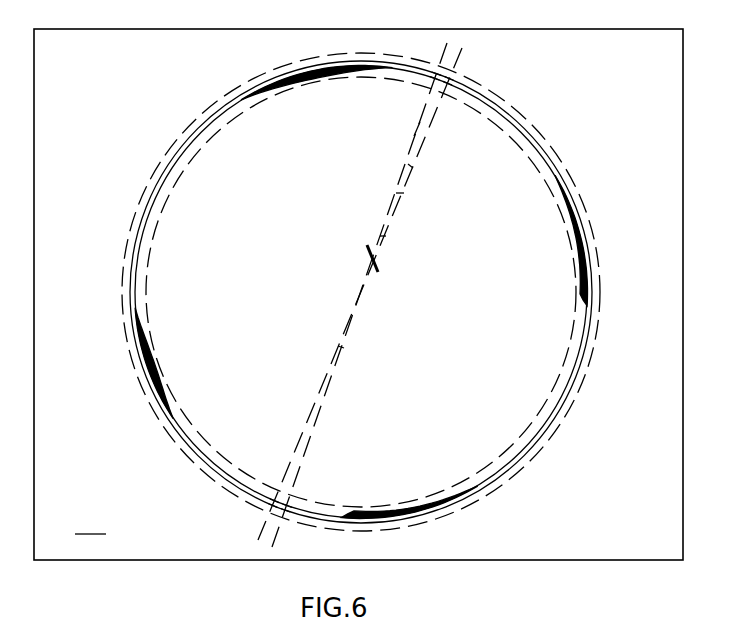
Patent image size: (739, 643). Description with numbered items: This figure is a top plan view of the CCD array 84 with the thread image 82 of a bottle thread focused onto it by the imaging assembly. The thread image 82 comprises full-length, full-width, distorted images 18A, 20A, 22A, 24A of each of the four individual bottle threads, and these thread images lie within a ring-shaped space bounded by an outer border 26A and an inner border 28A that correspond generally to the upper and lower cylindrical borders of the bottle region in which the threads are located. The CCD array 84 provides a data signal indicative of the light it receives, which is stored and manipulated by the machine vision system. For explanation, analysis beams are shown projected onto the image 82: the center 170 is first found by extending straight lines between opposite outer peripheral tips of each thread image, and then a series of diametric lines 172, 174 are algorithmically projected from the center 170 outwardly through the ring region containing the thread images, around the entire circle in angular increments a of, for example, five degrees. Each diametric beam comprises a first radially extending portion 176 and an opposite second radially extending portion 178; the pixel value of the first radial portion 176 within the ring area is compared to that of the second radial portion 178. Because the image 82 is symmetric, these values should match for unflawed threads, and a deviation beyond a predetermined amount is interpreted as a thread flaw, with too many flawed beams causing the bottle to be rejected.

The thread image 82 is at (583, 89).
The CCD array 84 is at (90, 522).
The distorted image of individual thread 18A is at (149, 393).
The distorted image of individual thread 20A is at (282, 74).
The distorted image of individual thread 22A is at (583, 214).
The distorted image of individual thread 24A is at (452, 508).
The outer boundary circle 26A is at (187, 134).
The inner boundary circle 28A is at (180, 183).
The center 170 is at (364, 276).
The diametric line 172 is at (412, 165).
The diametric line 174 is at (418, 127).
The first radially extending portion 176 is at (388, 234).
The second radially extending portion 178 is at (338, 347).
The angular increment a is at (401, 193).